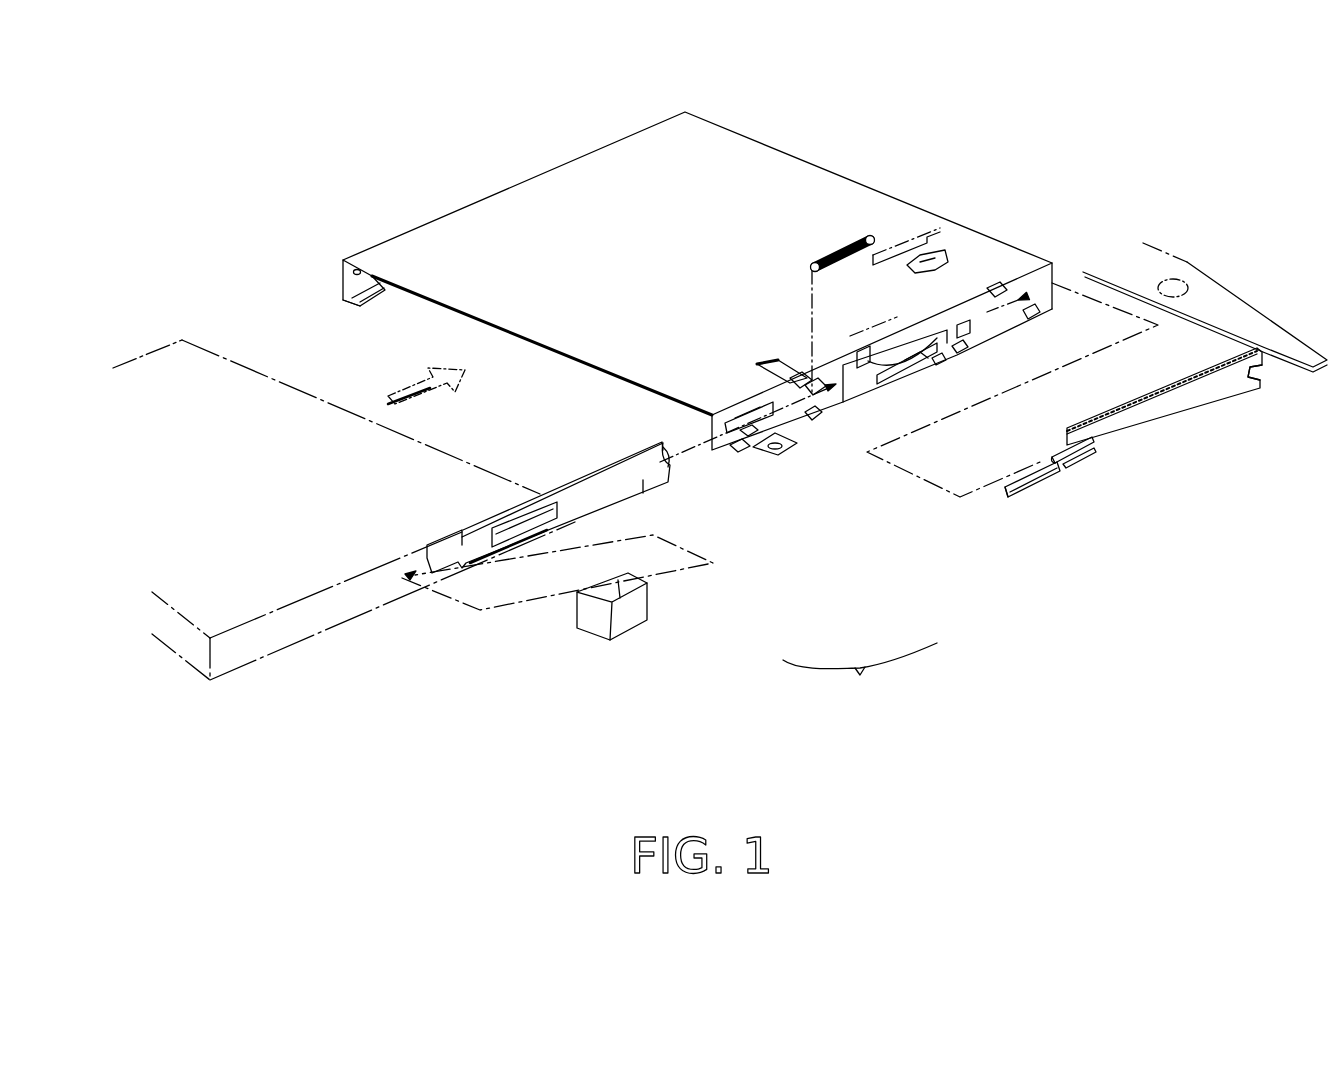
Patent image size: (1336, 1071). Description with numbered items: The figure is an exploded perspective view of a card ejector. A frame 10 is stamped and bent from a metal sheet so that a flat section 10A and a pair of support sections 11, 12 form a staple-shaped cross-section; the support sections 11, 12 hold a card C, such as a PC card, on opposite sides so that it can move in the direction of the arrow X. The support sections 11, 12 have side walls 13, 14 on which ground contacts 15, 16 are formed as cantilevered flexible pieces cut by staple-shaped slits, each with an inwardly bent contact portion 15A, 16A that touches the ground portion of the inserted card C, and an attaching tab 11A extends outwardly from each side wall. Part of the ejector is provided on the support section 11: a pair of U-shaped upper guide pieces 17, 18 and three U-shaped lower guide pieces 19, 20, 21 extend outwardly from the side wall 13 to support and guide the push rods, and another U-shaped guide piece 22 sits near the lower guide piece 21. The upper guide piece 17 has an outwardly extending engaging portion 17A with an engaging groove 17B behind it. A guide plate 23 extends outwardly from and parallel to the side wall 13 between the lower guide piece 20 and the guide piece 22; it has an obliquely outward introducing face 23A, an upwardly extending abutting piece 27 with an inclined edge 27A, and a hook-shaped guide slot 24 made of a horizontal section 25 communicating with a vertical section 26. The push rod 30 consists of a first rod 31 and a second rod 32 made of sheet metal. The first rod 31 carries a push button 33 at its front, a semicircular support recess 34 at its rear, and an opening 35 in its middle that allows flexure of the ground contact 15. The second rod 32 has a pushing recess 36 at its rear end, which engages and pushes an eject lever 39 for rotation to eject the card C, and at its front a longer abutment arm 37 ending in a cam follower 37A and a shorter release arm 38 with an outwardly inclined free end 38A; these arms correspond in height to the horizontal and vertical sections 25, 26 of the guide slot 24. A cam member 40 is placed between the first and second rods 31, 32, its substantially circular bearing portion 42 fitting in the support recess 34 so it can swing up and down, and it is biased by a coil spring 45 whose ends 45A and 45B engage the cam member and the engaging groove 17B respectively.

The frame 10 is at (772, 186).
The flat section 10A is at (685, 212).
The support section 11 is at (707, 432).
The attaching tab 11A is at (787, 458).
The support section 12 is at (363, 304).
The side wall 13 is at (792, 420).
The side wall 14 is at (343, 280).
The ground contact 15 is at (760, 452).
The contact portion 15A is at (737, 410).
The ground contact 16 is at (350, 293).
The contact portion 16A is at (375, 293).
The upper guide piece 17 is at (788, 368).
The engaging portion 17A is at (815, 375).
The engaging groove 17B is at (773, 390).
The upper guide piece 18 is at (995, 283).
The lower guide piece 19 is at (738, 458).
The lower guide piece 20 is at (815, 418).
The lower guide piece 21 is at (1027, 315).
The guide piece 22 is at (972, 338).
The guide plate 23 is at (860, 392).
The introducing face 23A is at (960, 347).
The guide slot 24 is at (888, 428).
The horizontal section 25 is at (903, 376).
The vertical section 26 is at (930, 368).
The abutting piece 27 is at (873, 352).
The inclined edge 27A is at (911, 356).
The push rod 30 is at (860, 674).
The first rod 31 is at (620, 487).
The second rod 32 is at (1142, 430).
The push button 33 is at (595, 630).
The support recess 34 is at (672, 465).
The opening 35 is at (518, 528).
The pushing recess 36 is at (1262, 368).
The abutment arm 37 is at (1025, 490).
The cam follower 37A is at (992, 495).
The release arm 38 is at (1060, 458).
The free end 38A is at (1068, 466).
The eject lever 39 is at (1240, 310).
The cam member 40 is at (941, 240).
The bearing portion 42 is at (918, 260).
The coil spring 45 is at (842, 243).
The spring end 45A is at (875, 233).
The spring end 45B is at (813, 266).
The card C is at (208, 380).
The direction of movement X is at (440, 386).